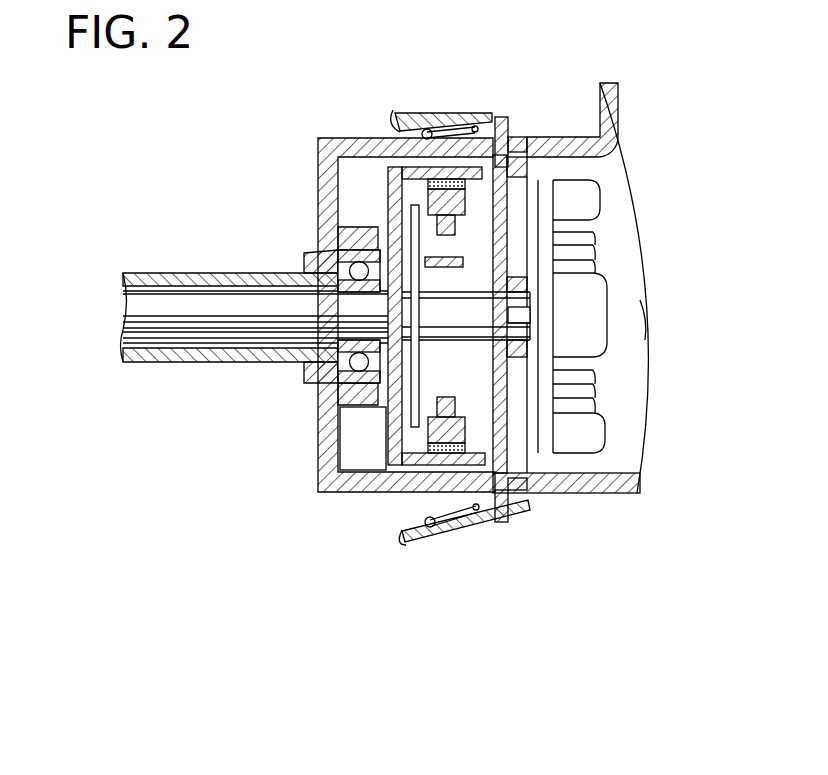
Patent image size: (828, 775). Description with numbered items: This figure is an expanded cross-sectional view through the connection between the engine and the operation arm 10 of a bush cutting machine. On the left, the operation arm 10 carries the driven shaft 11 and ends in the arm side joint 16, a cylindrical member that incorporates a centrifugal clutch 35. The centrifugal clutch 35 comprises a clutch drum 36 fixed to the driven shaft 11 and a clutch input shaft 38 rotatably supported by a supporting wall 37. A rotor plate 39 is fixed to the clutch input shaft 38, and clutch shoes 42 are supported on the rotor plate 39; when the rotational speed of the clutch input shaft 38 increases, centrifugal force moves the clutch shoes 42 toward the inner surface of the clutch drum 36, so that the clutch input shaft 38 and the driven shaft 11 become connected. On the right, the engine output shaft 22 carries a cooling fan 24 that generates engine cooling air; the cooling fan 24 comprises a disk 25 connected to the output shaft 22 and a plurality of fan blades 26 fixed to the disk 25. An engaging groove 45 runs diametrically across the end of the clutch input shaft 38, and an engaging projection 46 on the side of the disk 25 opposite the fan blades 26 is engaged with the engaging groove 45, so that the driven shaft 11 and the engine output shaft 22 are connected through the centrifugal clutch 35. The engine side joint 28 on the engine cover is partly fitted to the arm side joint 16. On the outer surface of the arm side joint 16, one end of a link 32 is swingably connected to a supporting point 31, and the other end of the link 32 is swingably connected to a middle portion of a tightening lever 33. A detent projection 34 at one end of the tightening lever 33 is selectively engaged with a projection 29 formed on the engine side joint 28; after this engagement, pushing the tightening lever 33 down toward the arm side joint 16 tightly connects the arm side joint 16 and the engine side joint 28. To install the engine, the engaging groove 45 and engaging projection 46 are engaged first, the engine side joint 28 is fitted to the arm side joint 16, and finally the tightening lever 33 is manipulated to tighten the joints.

The operation arm 10 is at (181, 278).
The driven shaft 11 is at (135, 302).
The arm side joint 16 is at (330, 492).
The engine output shaft 22 is at (628, 312).
The cooling fan 24 is at (592, 192).
The disk 25 is at (547, 445).
The fan blades 26 is at (587, 404).
The engine side joint 28 is at (613, 483).
The projection 29 is at (501, 122).
The supporting point 31 is at (478, 112).
The link 32 is at (430, 118).
The tightening lever 33 is at (400, 110).
The detent projection 34 is at (520, 135).
The centrifugal clutch 35 is at (366, 433).
The clutch drum 36 is at (395, 215).
The supporting wall 37 is at (500, 213).
The clutch input shaft 38 is at (507, 286).
The rotor plate 39 is at (414, 395).
The clutch shoes 42 is at (430, 188).
The engaging groove 45 is at (524, 320).
The engaging projection 46 is at (520, 312).